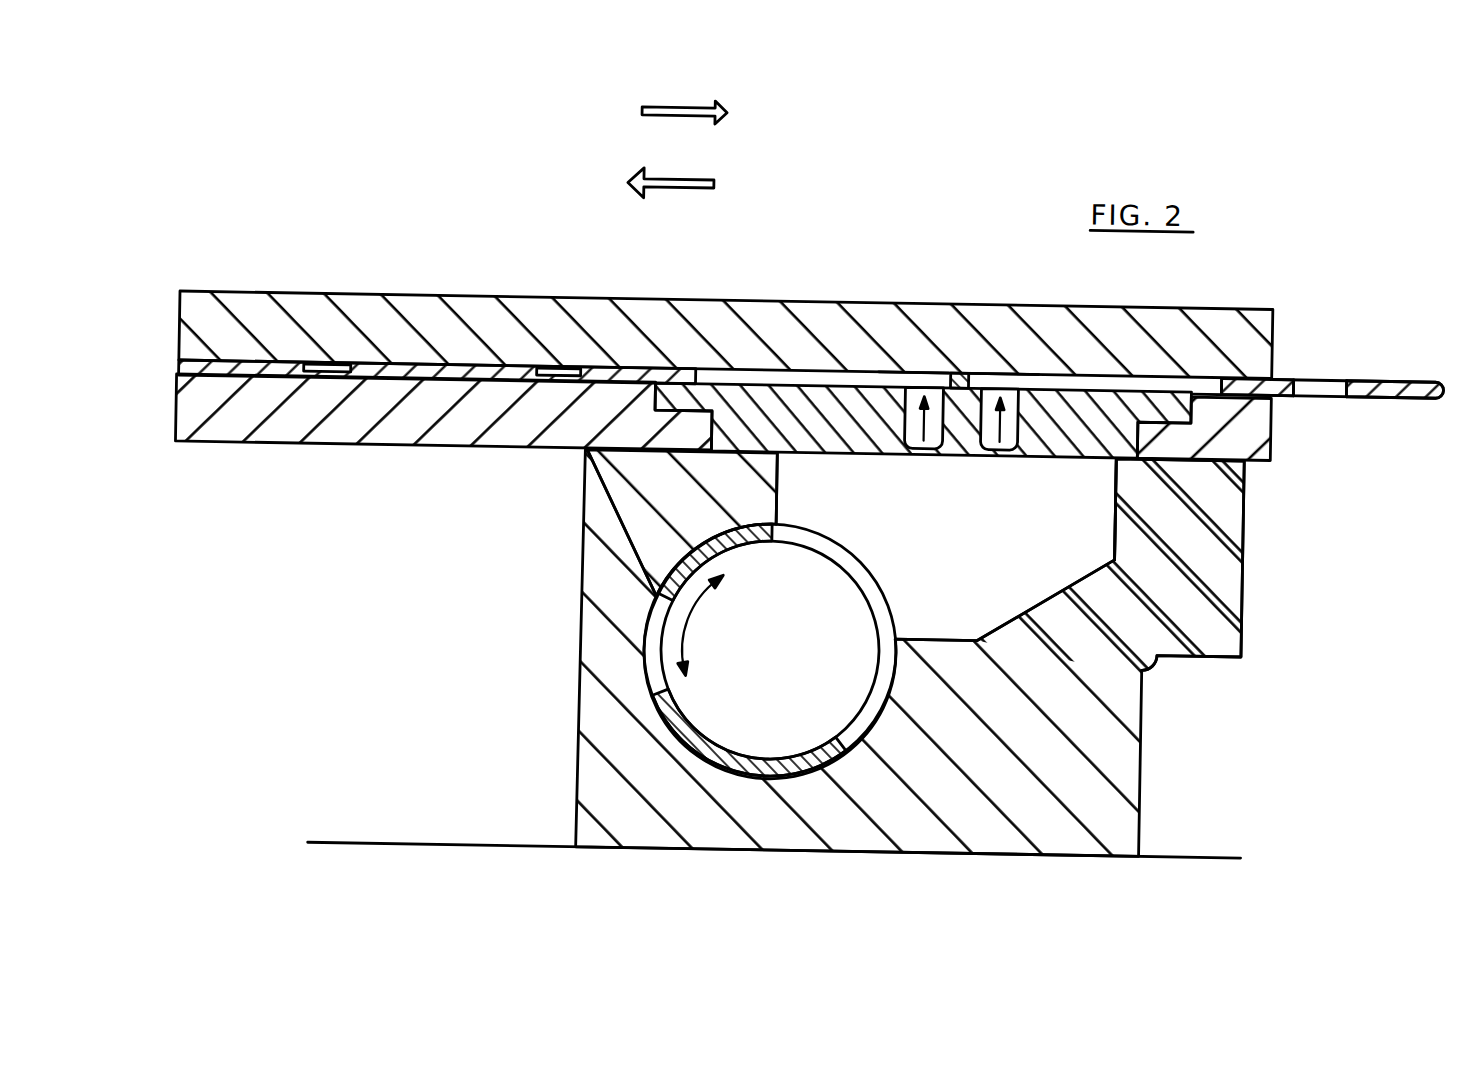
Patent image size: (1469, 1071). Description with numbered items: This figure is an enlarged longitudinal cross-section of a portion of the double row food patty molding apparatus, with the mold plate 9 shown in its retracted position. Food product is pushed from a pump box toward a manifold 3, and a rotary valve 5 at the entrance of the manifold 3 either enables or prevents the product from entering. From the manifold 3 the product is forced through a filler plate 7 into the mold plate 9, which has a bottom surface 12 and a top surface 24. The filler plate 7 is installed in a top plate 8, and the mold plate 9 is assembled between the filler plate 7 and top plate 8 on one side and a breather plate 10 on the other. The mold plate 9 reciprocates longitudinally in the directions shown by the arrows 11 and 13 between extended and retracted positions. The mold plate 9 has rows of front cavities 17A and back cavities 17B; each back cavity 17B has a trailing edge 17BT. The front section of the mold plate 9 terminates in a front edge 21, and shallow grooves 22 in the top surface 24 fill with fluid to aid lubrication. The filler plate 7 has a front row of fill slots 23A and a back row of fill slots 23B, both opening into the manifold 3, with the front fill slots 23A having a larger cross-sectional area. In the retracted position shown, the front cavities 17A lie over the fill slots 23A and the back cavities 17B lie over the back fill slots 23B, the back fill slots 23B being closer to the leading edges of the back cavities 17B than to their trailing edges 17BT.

The manifold 3 is at (955, 599).
The rotary valve 5 is at (717, 729).
The filler plate 7 is at (1105, 443).
The top plate 8 is at (359, 442).
The mold plate 9 is at (462, 359).
The breather plate 10 is at (611, 292).
The arrow (longitudinal direction) 11 is at (672, 99).
The bottom surface 12 is at (1370, 379).
The arrow (longitudinal direction) 13 is at (698, 168).
The front cavities 17A is at (991, 359).
The back cavities 17B is at (915, 360).
The trailing edge of back cavity 17BT is at (698, 370).
The front edge 21 is at (1435, 380).
The shallow grooves 22 is at (316, 362).
The front row of fill slots 23A is at (1010, 443).
The back row of fill slots 23B is at (917, 443).
The top surface 24 is at (1287, 359).